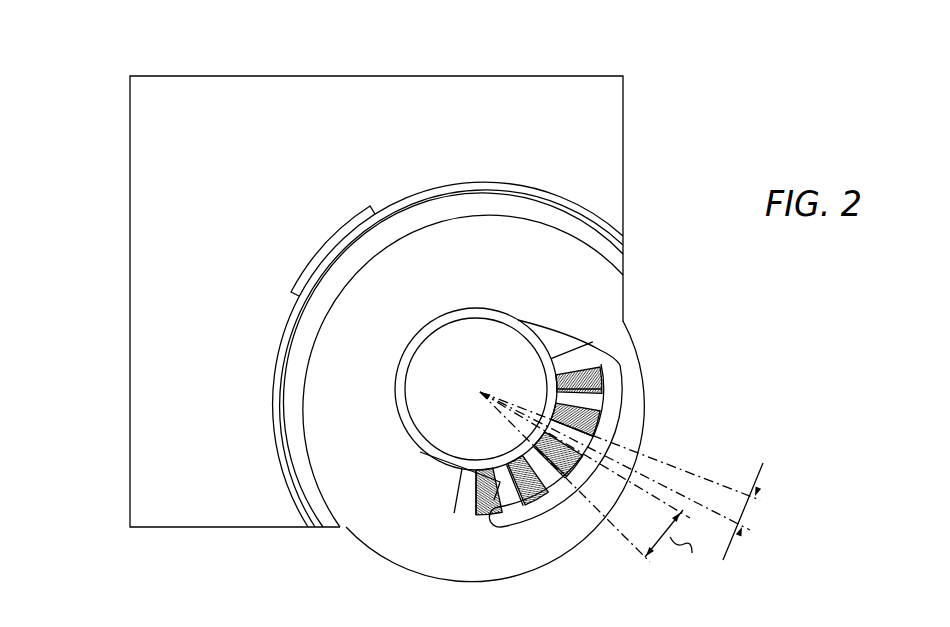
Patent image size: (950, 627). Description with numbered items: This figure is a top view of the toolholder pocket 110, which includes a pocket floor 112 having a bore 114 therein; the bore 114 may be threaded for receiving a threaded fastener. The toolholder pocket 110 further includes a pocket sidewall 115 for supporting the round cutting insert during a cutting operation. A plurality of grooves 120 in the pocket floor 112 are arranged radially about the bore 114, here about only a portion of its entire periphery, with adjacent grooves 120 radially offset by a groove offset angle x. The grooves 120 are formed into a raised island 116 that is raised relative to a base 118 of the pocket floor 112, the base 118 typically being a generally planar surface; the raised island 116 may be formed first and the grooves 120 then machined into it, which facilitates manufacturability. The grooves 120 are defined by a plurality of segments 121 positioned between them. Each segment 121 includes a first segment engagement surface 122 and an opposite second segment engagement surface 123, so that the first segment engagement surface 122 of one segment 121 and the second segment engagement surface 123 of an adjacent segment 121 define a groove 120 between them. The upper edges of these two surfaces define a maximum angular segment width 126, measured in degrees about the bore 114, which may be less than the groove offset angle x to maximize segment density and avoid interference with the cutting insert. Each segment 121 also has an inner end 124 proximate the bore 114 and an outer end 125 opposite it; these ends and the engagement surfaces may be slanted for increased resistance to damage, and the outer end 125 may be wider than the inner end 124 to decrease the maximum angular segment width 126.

The toolholder pocket 110 is at (97, 83).
The pocket floor 112 is at (612, 292).
The bore 114 is at (467, 333).
The pocket sidewall 115 is at (451, 358).
The raised island 116 is at (624, 420).
The base 118 is at (533, 552).
The grooves 120 is at (640, 380).
The segments 121 is at (508, 508).
The first segment engagement surface 122 is at (460, 501).
The second segment engagement surface 123 is at (537, 453).
The inner end 124 is at (560, 397).
The outer end 125 is at (558, 370).
The maximum angular segment width 126 is at (630, 478).